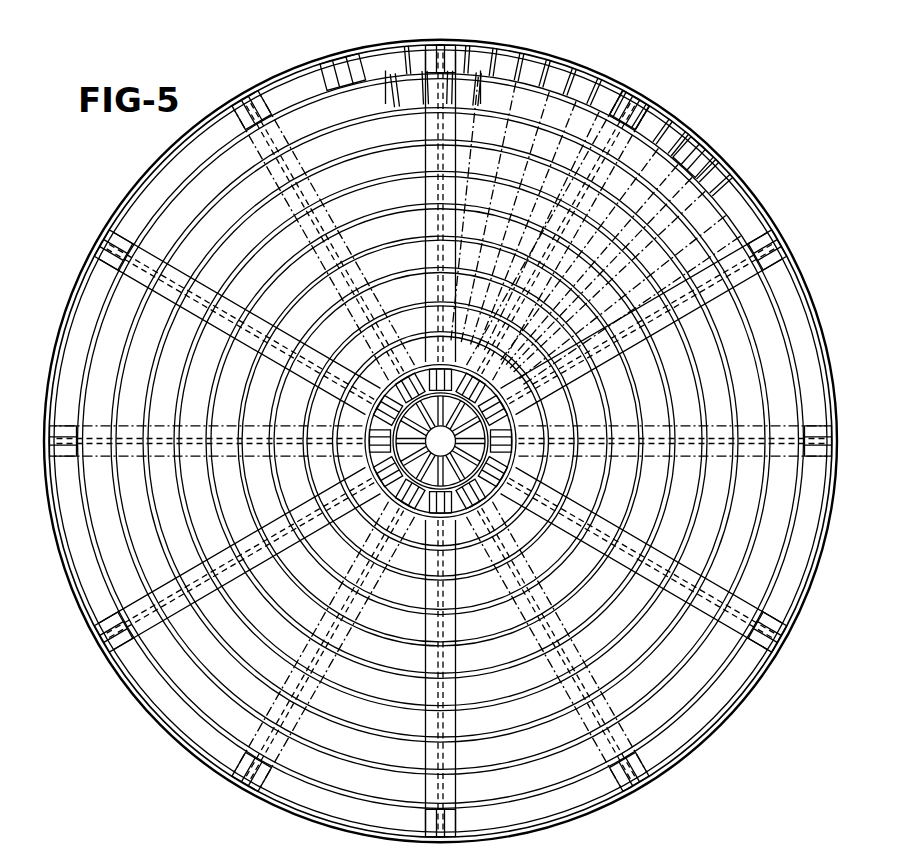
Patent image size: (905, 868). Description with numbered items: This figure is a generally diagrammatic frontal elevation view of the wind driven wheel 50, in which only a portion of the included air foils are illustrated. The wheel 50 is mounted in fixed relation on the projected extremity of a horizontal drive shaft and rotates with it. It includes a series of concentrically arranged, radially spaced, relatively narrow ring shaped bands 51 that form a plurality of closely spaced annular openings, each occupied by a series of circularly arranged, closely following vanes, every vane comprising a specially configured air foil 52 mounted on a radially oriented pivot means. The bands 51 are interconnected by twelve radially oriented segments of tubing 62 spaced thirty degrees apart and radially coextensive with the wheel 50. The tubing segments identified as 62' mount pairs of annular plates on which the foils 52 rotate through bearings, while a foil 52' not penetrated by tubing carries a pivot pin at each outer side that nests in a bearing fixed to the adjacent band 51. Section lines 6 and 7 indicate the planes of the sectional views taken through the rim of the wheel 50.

The wind driven wheel 50 is at (120, 190).
The ring shaped bands 51 is at (660, 519).
The air foil 52 is at (441, 440).
The air foil with pivot pins 52' is at (575, 120).
The radially oriented tubing segment 62 is at (467, 430).
The foil-mounting tubing segment 62' is at (465, 440).
The section line 6- 6 is at (386, 70).
The section line 7- 7 is at (585, 90).